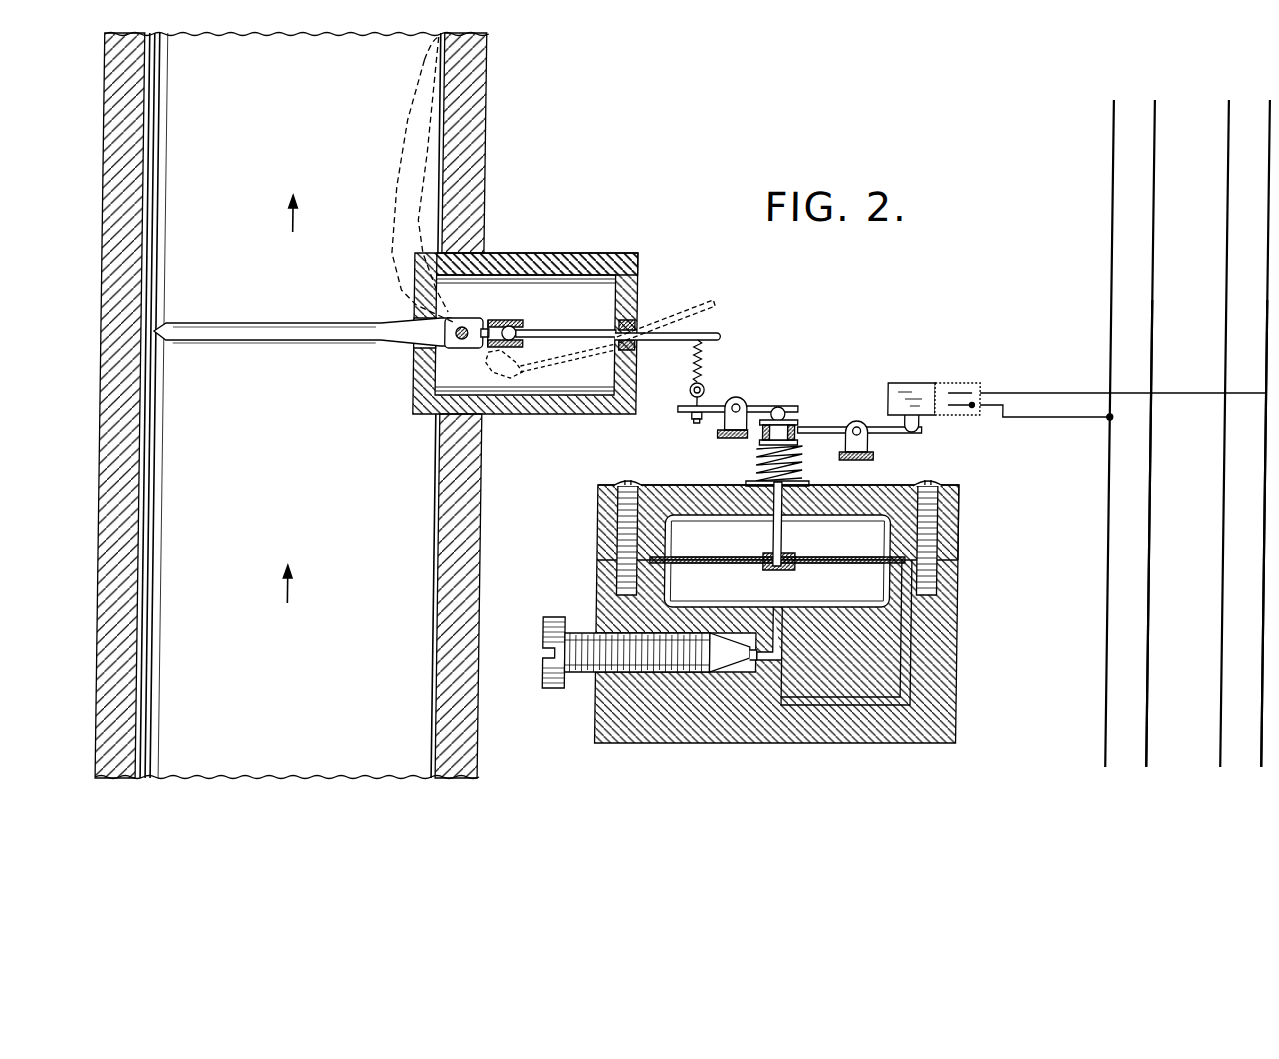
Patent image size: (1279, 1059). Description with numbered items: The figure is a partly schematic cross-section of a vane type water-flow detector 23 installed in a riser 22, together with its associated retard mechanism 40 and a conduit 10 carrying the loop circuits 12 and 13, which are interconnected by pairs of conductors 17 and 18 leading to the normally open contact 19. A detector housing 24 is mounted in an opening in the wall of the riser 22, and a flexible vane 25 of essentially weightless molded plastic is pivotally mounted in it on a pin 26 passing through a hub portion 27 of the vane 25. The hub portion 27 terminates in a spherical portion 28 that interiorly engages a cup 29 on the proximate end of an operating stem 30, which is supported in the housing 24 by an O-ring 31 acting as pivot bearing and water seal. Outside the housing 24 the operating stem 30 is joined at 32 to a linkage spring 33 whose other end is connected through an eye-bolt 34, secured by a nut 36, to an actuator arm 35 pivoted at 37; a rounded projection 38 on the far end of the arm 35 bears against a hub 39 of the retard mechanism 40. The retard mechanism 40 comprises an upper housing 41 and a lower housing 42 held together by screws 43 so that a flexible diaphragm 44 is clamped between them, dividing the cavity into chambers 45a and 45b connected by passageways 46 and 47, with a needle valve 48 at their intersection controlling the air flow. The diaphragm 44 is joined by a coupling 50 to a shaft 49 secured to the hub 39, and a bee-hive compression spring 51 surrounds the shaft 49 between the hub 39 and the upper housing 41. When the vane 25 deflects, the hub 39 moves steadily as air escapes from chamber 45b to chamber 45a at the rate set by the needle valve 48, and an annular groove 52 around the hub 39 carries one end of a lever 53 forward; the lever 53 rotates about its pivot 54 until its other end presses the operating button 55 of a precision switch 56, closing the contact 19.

The conduit 10 is at (1193, 102).
The loop circuit 12 is at (1262, 588).
The loop circuit 13 is at (1149, 634).
The conductor 17 is at (1043, 393).
The conductor 18 is at (1042, 418).
The normally open contact 19 is at (963, 396).
The riser 22 is at (483, 113).
The vane type water-flow detector 23 is at (556, 249).
The detector housing 24 is at (600, 264).
The flexible vane 25 is at (405, 178).
The pin 26 is at (461, 340).
The hub portion 27 is at (465, 322).
The spherical portion 28 is at (508, 323).
The cup 29 is at (523, 328).
The operating stem 30 is at (584, 330).
The O-ring 31 is at (636, 346).
The joint 32 is at (718, 335).
The linkage spring 33 is at (703, 362).
The eye-bolt 34 is at (705, 389).
The actuator arm 35 is at (776, 405).
The nut 36 is at (690, 419).
The pivot 37 is at (740, 405).
The rounded projection 38 is at (784, 412).
The hub 39 is at (760, 435).
The retard mechanism 40 is at (750, 630).
The upper housing 41 is at (962, 528).
The lower housing 42 is at (962, 612).
The screws 43 is at (623, 482).
The flexible diaphragm 44 is at (715, 563).
The chamber 45a is at (848, 547).
The chamber 45b is at (848, 594).
The passageway 46 is at (779, 614).
The passageway 47 is at (906, 657).
The needle valve 48 is at (548, 633).
The shaft 49 is at (774, 534).
The coupling 50 is at (766, 569).
The bee-hive compression spring 51 is at (762, 468).
The annular groove 52 is at (795, 436).
The lever 53 is at (832, 427).
The pivot 54 is at (857, 427).
The operating button 55 is at (919, 428).
The precision switch 56 is at (912, 383).